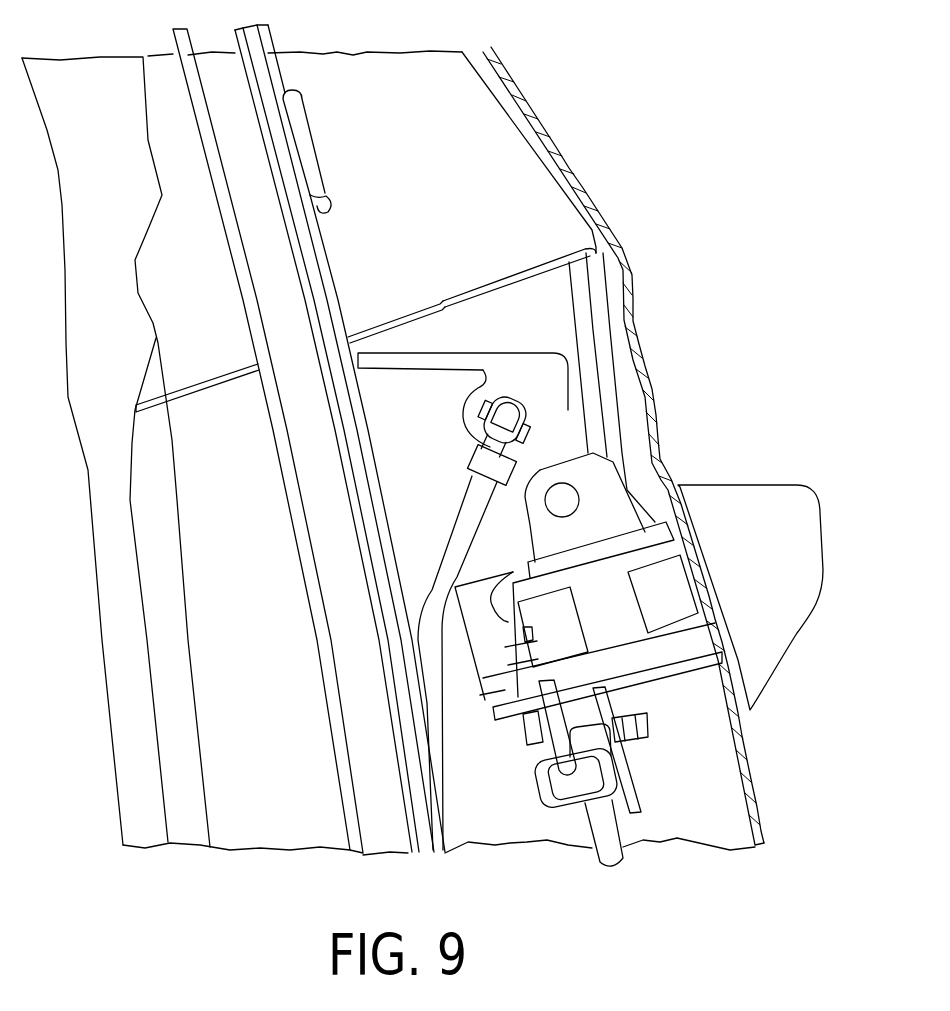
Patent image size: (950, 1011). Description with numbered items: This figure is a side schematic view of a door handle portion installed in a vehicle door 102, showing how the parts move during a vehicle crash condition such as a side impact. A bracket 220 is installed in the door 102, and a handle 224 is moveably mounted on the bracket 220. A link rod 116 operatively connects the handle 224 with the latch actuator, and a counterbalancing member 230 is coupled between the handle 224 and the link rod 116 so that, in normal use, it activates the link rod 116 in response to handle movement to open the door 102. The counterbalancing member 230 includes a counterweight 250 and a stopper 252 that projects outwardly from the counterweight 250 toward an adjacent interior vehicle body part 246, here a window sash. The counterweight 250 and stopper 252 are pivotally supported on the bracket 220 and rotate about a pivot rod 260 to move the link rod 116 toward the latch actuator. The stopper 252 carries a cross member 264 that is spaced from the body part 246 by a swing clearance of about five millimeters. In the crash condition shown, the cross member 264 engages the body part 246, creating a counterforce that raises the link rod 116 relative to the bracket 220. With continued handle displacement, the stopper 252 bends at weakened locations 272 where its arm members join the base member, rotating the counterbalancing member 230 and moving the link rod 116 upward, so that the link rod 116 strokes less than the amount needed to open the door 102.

The vehicle door 102 is at (752, 745).
The link rod 116 is at (437, 702).
The bracket 220 is at (670, 642).
The handle 224 is at (745, 497).
The counterbalancing member 230 is at (525, 333).
The interior vehicle body part 246 is at (322, 248).
The counterweight 250 is at (550, 413).
The stopper 252 is at (420, 360).
The first arm member 260 is at (563, 498).
The cross member 264 is at (357, 362).
The locations 272 is at (478, 363).